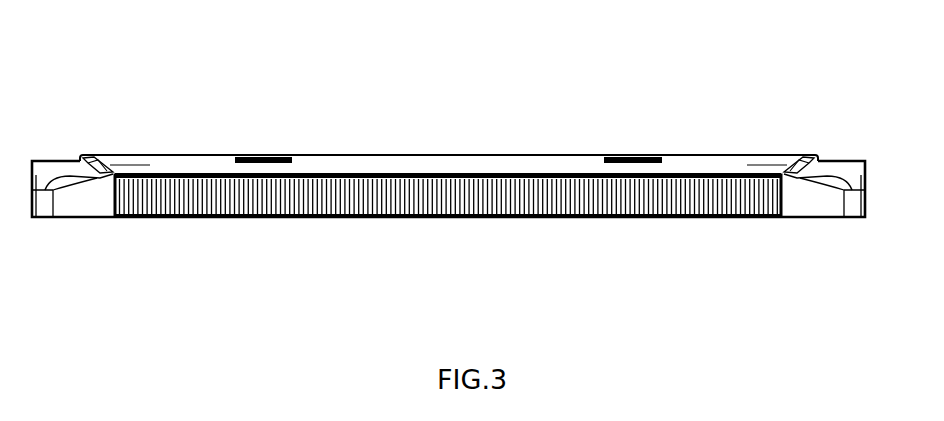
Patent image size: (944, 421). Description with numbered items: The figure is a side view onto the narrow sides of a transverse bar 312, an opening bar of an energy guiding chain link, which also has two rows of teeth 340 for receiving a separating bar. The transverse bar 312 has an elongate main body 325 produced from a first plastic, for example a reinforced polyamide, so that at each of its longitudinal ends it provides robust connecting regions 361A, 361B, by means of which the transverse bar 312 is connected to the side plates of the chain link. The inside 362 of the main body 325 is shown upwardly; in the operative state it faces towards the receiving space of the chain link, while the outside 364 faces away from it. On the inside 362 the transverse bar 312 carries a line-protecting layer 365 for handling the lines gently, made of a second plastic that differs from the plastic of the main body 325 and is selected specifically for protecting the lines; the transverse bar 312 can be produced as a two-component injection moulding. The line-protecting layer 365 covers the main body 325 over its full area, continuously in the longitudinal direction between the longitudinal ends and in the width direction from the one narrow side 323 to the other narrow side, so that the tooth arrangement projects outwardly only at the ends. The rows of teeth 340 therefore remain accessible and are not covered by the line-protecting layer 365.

The transverse bar 312 is at (687, 85).
The inside 362 is at (500, 148).
The line-protecting layer 365 is at (340, 166).
The narrow side 323 is at (382, 205).
The main body 325 is at (207, 195).
The row of teeth 340 is at (240, 213).
The outside 364 is at (548, 222).
The connecting region 361A is at (63, 195).
The connecting region 361B is at (820, 197).